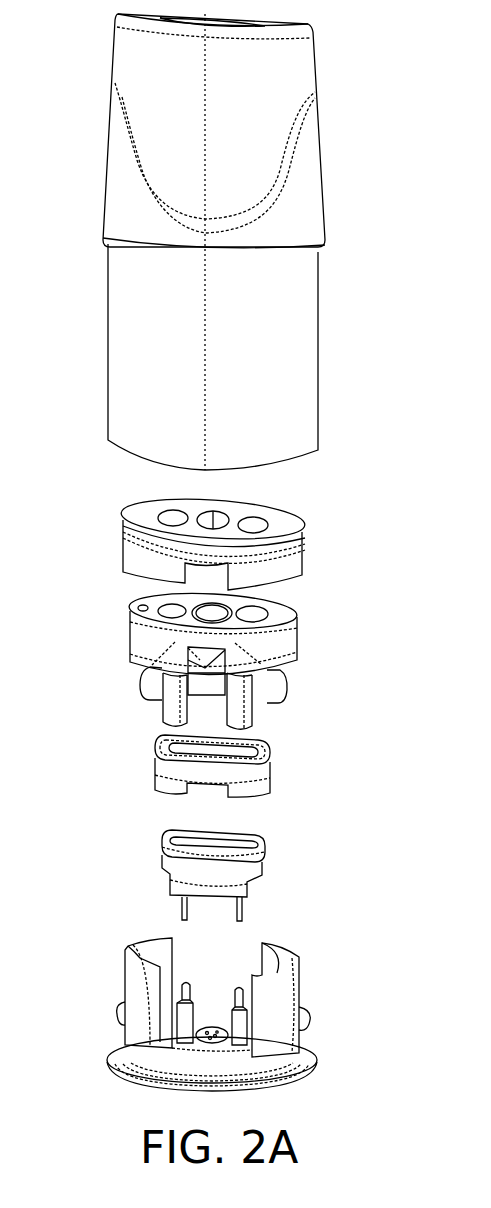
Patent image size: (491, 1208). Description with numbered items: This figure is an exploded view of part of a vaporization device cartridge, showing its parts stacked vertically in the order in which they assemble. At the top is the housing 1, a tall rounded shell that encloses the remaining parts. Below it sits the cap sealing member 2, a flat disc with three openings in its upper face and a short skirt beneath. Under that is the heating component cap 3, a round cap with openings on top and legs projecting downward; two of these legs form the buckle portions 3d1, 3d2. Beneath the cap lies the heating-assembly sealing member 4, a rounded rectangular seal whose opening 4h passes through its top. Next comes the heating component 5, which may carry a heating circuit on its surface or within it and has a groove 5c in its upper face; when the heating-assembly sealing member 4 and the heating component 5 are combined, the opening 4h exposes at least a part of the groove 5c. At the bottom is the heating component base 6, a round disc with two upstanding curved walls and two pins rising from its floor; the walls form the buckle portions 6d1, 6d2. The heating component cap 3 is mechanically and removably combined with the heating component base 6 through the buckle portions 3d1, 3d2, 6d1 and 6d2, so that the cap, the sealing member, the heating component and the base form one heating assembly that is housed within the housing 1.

The housing 1 is at (302, 342).
The cap sealing member 2 is at (292, 523).
The heating component cap 3 is at (236, 660).
The buckle portion 3d1 is at (142, 668).
The buckle portion 3d2 is at (287, 675).
The heating-assembly sealing member 4 is at (278, 768).
The opening 4h is at (232, 750).
The heating component 5 is at (280, 870).
The groove 5c is at (222, 842).
The heating component base 6 is at (236, 999).
The buckle portion 6d1 is at (142, 953).
The buckle portion 6d2 is at (287, 958).